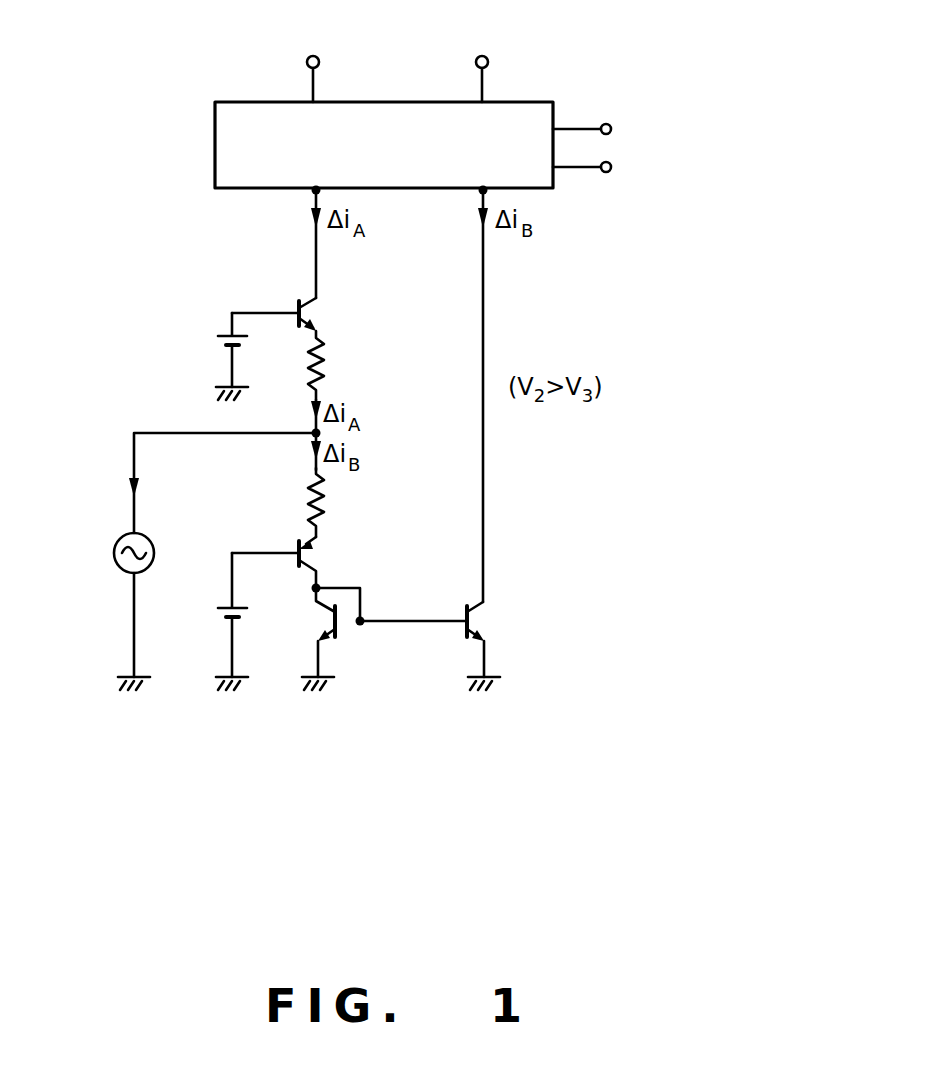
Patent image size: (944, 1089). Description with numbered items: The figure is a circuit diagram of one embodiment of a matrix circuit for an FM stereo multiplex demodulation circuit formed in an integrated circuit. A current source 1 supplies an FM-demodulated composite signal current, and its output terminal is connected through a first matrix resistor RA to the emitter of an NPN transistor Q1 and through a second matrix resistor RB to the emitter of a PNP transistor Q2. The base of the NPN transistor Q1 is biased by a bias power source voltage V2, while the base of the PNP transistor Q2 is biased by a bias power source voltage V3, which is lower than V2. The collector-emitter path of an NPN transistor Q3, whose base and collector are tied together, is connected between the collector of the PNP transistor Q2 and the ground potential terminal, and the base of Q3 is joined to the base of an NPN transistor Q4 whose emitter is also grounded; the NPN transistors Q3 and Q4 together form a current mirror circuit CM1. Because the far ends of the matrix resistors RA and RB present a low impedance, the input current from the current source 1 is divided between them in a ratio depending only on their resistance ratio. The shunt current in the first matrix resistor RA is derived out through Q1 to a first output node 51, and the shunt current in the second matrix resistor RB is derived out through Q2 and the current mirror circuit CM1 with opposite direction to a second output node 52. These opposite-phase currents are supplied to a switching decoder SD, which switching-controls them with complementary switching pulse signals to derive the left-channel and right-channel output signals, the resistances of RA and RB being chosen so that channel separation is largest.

The current source 1 is at (116, 565).
The first output node 51 is at (310, 195).
The second output node 52 is at (479, 194).
The switching decoder SD is at (215, 152).
The NPN transistor Q1 is at (318, 312).
The PNP transistor Q2 is at (318, 553).
The NPN transistor Q3 is at (329, 639).
The NPN transistor Q4 is at (400, 647).
The first matrix resistor RA is at (337, 365).
The second matrix resistor RB is at (336, 502).
The bias power source voltage V2 is at (249, 356).
The bias power source voltage V3 is at (252, 621).
The current mirror circuit CM1 is at (401, 656).